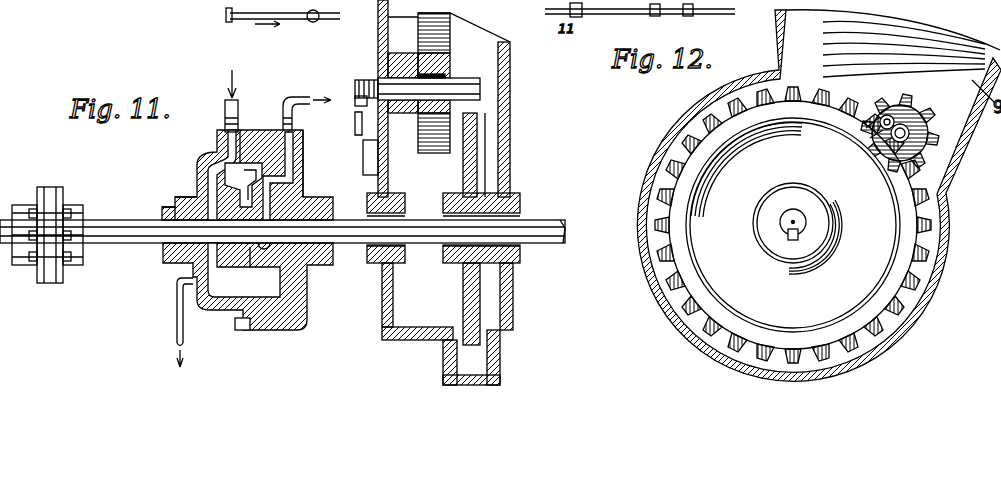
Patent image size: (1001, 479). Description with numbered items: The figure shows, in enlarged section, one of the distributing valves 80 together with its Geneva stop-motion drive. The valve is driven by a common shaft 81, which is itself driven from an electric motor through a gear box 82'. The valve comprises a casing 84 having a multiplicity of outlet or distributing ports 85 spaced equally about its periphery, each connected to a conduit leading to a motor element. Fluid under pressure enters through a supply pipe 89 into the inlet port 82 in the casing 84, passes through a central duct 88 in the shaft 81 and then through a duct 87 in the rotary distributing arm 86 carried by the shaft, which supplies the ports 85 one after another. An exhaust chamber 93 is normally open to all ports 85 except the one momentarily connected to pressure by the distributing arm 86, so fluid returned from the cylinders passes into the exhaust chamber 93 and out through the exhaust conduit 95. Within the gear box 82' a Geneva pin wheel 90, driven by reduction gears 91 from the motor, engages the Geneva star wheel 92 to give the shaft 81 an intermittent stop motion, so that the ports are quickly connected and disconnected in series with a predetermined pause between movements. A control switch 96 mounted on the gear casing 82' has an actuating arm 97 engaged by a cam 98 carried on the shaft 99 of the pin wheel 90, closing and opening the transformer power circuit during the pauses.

In FIG. 11, the distributing valve 80 is at (198, 163).
In FIG. 11, the common shaft 81 is at (135, 224).
In FIG. 12, the common shaft 81 is at (788, 226).
In FIG. 11, the inlet port 82 is at (395, 105).
In FIG. 12, the gear box 82' is at (807, 196).
In FIG. 11, the casing 84 is at (198, 186).
In FIG. 11, the outlet port 85 is at (287, 128).
In FIG. 11, the rotary distributing arm 86 is at (231, 149).
In FIG. 11, the duct 87 is at (292, 190).
In FIG. 11, the central duct 88 is at (240, 254).
In FIG. 11, the supply pipe 89 is at (224, 112).
In FIG. 11, the Geneva pin wheel 90 is at (480, 105).
In FIG. 12, the Geneva pin wheel 90 is at (905, 124).
In FIG. 11, the reduction gears 91 is at (440, 30).
In FIG. 11, the Geneva star wheel 92 is at (470, 160).
In FIG. 12, the Geneva star wheel 92 is at (880, 243).
In FIG. 11, the exhaust chamber 93 is at (229, 305).
In FIG. 11, the exhaust conduit 95 is at (177, 320).
In FIG. 11, the control switch 96 is at (363, 160).
In FIG. 11, the actuating arm 97 is at (355, 128).
In FIG. 11, the cam 98 is at (356, 110).
In FIG. 11, the shaft 99 is at (378, 75).
In FIG. 12, the shaft 99 is at (915, 143).